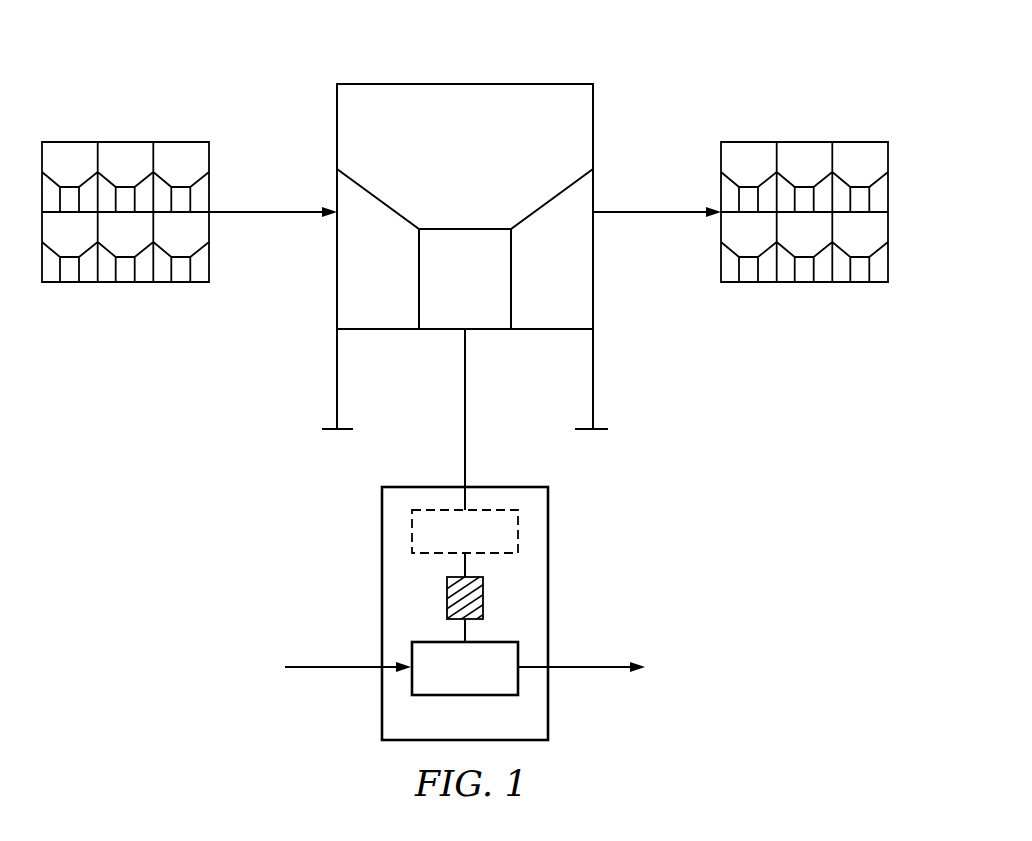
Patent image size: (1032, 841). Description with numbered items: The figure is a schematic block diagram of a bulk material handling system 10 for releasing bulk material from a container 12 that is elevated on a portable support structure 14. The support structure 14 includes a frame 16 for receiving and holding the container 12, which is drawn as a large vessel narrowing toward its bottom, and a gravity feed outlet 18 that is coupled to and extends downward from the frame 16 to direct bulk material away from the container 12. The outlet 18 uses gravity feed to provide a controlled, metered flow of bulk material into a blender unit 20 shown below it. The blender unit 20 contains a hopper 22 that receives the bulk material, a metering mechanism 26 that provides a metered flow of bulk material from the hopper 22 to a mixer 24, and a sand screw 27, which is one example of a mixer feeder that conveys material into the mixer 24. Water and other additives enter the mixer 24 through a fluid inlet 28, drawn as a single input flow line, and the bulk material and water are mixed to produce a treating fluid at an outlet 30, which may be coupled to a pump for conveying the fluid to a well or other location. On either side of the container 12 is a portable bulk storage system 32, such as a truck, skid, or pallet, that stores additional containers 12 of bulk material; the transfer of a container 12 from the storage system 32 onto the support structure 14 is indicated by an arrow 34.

The bulk material handling system 10 is at (183, 27).
The container 12 is at (594, 187).
The portable support structure 14 is at (310, 352).
The frame 16 is at (594, 374).
The gravity feed outlet 18 is at (466, 398).
The blender unit 20 is at (548, 513).
The hopper 22 is at (412, 531).
The mixer 24 is at (501, 642).
The metering mechanism 26 is at (502, 588).
The sand screw 27 is at (447, 598).
The fluid inlet 28 is at (359, 671).
The outlet 30 is at (572, 671).
The portable bulk storage system 32 is at (180, 138).
The arrow 34 is at (264, 211).